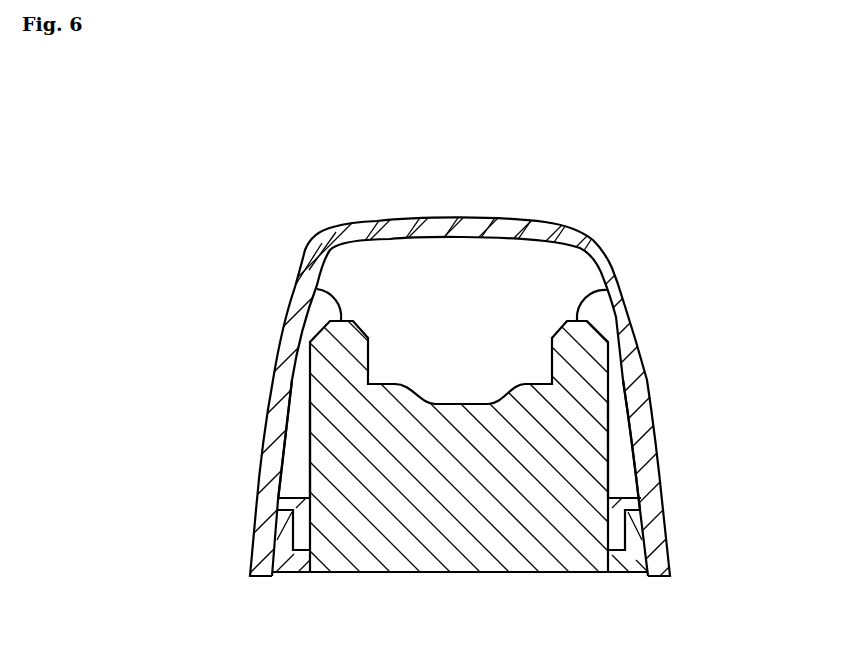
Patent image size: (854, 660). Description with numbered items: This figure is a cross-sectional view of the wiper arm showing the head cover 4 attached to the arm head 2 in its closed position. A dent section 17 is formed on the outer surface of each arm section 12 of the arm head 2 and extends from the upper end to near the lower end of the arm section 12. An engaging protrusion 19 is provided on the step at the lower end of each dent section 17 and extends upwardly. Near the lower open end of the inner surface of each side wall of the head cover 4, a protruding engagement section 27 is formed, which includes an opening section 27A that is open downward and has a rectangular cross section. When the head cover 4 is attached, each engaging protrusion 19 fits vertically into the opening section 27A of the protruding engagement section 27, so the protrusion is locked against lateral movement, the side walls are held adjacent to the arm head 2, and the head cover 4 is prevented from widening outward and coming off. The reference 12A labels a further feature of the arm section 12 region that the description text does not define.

The head cover 4 is at (585, 226).
The arm head 2 is at (398, 572).
The seal lip 12A is at (317, 289).
The arm section 12 is at (309, 393).
The dent section 17 is at (309, 443).
The protruding engagement section 27 is at (298, 497).
The opening section 27A is at (287, 512).
The engaging protrusion 19 is at (268, 545).